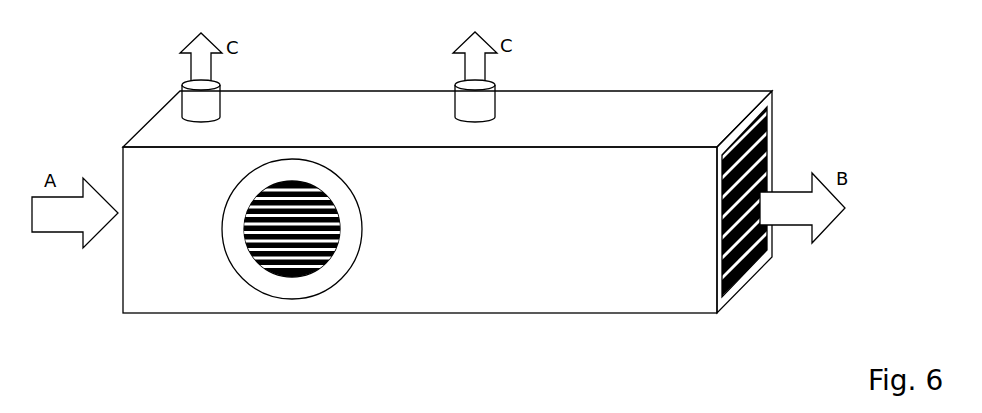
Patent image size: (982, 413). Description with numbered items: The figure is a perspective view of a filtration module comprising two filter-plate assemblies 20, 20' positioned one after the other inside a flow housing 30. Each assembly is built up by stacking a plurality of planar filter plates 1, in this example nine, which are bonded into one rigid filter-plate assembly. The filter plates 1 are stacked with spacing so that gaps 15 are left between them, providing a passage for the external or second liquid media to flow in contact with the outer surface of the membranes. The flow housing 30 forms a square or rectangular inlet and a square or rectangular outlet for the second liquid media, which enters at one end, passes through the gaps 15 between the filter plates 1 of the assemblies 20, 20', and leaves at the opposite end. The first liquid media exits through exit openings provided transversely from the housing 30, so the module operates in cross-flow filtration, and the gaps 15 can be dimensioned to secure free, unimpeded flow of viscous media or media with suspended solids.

The filter plate 1 is at (753, 268).
The gap 15 is at (760, 257).
The filter-plate assembly 20 is at (779, 220).
The filter-plate assembly 20' is at (289, 269).
The flow housing 30 is at (657, 302).